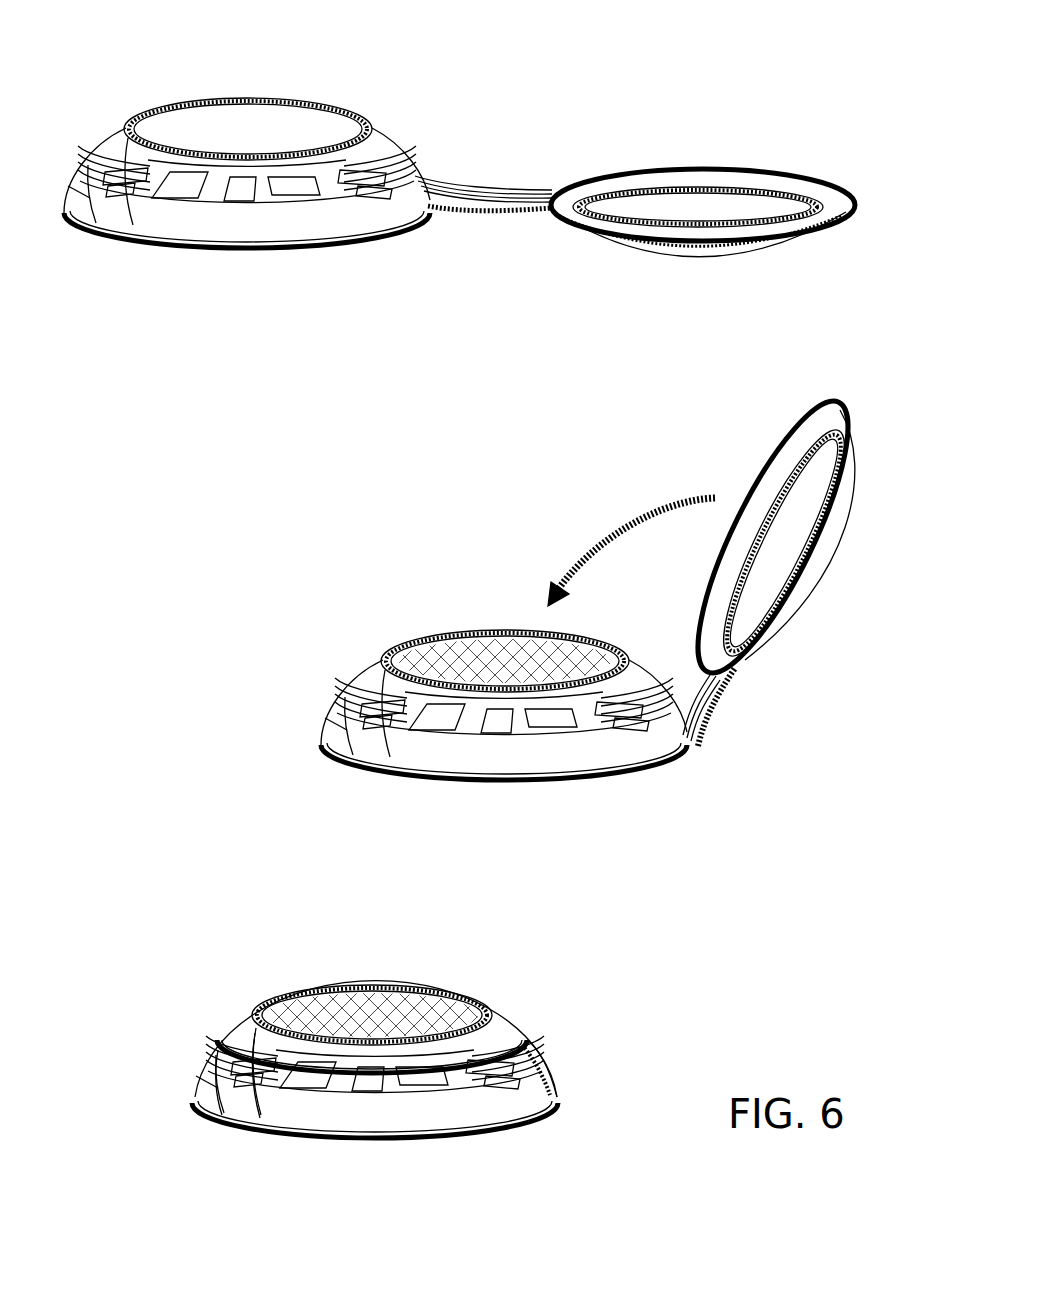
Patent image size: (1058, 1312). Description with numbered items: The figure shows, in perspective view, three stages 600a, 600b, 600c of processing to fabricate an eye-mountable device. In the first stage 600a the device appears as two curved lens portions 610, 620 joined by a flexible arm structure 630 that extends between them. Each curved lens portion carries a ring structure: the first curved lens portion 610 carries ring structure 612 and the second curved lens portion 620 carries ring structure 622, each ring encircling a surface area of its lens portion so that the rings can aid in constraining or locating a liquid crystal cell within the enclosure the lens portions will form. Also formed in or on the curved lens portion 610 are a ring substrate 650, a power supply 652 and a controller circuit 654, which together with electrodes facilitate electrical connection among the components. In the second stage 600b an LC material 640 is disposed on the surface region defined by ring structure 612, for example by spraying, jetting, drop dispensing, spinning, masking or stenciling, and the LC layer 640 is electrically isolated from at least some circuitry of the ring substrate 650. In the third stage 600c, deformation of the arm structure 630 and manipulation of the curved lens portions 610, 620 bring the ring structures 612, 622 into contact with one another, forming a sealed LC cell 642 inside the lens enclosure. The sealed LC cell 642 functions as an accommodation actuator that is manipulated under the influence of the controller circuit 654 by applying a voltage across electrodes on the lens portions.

The stage 600a is at (812, 76).
The stage 600b is at (292, 487).
The stage 600c is at (118, 948).
The curved lens portion 610 is at (184, 229).
The ring structure 612 is at (357, 112).
The curved lens portion 620 is at (655, 263).
The ring structure 622 is at (720, 183).
The flexible arm structure 630 is at (456, 187).
The LC material 640 is at (492, 652).
The sealed LC cell 642 is at (389, 1000).
The ring substrate 650 is at (330, 185).
The power supply 652 is at (188, 190).
The controller circuit 654 is at (244, 194).